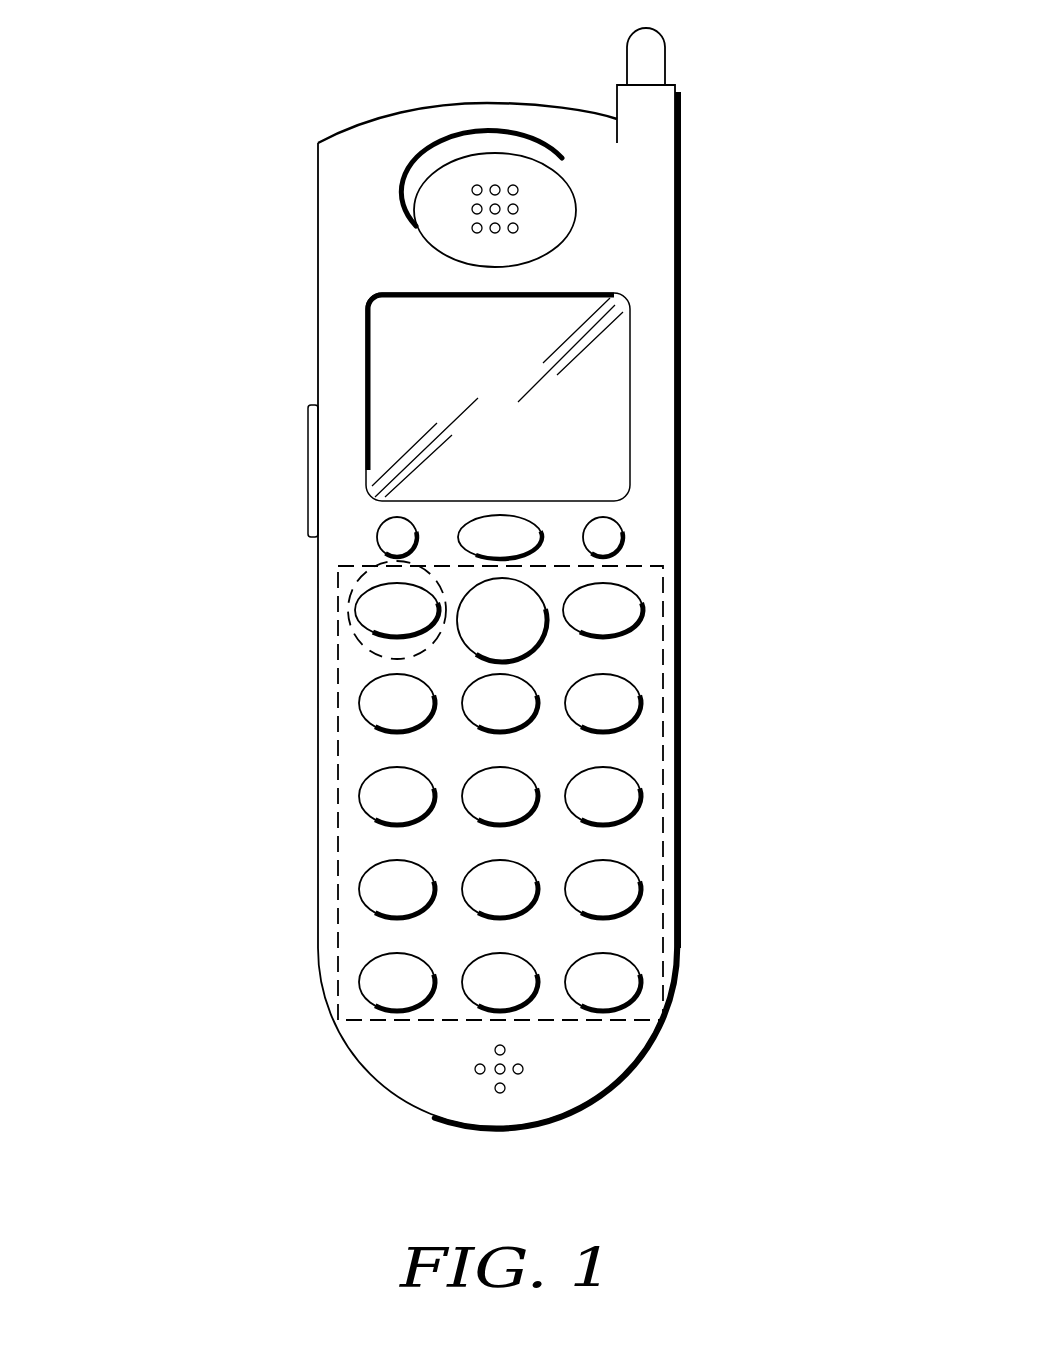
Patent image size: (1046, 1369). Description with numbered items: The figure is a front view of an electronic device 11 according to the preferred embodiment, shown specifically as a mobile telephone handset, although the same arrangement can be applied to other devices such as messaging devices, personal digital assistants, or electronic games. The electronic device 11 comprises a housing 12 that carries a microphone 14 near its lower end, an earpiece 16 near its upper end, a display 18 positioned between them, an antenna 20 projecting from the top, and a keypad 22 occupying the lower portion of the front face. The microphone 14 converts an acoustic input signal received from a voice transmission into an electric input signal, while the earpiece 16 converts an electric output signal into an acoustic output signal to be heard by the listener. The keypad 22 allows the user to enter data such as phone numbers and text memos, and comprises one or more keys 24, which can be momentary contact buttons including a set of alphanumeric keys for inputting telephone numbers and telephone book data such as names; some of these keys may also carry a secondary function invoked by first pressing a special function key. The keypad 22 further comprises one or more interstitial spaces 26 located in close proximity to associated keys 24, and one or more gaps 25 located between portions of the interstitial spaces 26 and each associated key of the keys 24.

The electronic device 11 is at (505, 636).
The housing 12 is at (655, 505).
The microphone 14 is at (522, 1070).
The earpiece 16 is at (448, 195).
The display 18 is at (602, 434).
The antenna 20 is at (641, 47).
The keypad 22 is at (497, 790).
The keys 24 is at (370, 603).
The gaps 25 is at (353, 620).
The interstitial spaces 26 is at (393, 667).